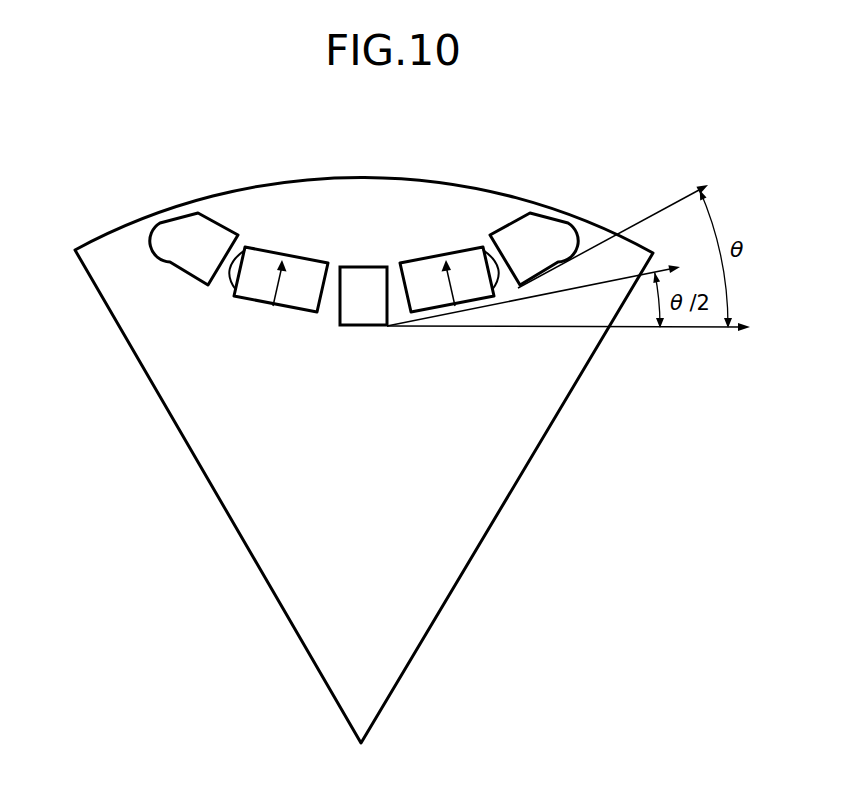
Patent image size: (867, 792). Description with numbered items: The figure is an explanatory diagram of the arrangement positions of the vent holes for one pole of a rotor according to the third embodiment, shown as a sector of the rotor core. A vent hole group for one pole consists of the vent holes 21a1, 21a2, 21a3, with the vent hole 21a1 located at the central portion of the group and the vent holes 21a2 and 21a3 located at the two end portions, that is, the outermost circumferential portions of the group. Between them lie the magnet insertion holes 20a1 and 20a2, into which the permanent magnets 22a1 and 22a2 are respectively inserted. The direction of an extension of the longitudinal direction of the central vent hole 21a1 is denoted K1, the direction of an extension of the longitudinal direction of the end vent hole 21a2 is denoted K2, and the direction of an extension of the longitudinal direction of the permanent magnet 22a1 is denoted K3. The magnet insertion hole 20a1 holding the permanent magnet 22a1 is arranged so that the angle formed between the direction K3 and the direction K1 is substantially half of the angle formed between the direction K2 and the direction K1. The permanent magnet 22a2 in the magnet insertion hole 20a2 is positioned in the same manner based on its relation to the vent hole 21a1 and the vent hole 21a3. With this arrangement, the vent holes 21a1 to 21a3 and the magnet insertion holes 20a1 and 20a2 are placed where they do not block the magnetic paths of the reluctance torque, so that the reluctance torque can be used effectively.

The magnet insertion hole 20a1 is at (424, 340).
The magnet insertion hole 20a2 is at (228, 323).
The vent hole 21a1 is at (365, 307).
The vent hole 21a2 is at (532, 267).
The vent hole 21a3 is at (193, 270).
The permanent magnet 22a1 is at (472, 293).
The permanent magnet 22a2 is at (291, 301).
The direction K1 is at (690, 332).
The direction K2 is at (668, 206).
The direction K3 is at (603, 285).